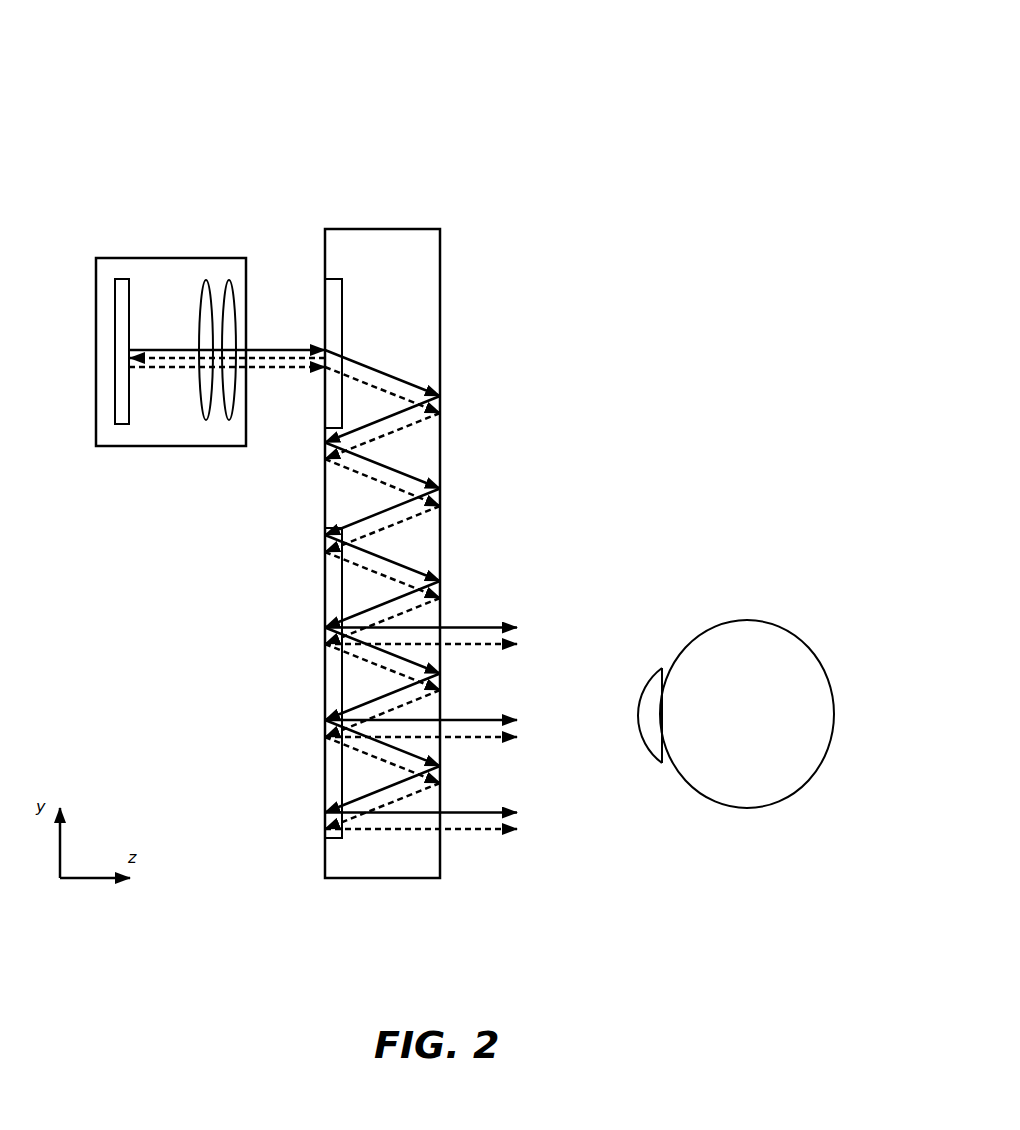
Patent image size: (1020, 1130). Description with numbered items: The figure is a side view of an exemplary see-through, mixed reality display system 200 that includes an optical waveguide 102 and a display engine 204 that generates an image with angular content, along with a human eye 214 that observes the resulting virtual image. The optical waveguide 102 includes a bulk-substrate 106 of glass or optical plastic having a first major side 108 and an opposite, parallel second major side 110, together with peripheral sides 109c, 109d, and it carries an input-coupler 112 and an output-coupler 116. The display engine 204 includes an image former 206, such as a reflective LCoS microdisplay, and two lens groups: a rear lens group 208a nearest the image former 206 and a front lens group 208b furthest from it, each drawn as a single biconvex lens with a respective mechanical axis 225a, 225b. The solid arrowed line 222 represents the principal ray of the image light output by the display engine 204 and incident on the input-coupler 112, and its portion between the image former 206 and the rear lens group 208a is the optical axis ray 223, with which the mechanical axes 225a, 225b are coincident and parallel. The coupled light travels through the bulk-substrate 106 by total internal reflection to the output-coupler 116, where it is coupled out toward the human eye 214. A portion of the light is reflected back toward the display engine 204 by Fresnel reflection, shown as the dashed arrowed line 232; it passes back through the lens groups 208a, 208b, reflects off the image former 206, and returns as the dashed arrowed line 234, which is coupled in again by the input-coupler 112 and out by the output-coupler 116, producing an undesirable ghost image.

The see-through mixed reality display system 200 is at (328, 29).
The optical waveguide 102 is at (355, 196).
The bulk-substrate 106 is at (398, 266).
The first major side 108 is at (442, 262).
The second major side 110 is at (322, 242).
The peripheral side 109c is at (390, 229).
The peripheral side 109d is at (405, 879).
The input-coupler 112 is at (324, 288).
The output-coupler 116 is at (324, 787).
The display engine 204 is at (207, 258).
The image former 206 is at (124, 425).
The optical axis ray 223 is at (152, 348).
The mechanical axis 225a is at (206, 346).
The mechanical axis 225b is at (232, 278).
The lens group 208a is at (206, 421).
The lens group 208b is at (230, 421).
The solid arrowed line 222 is at (272, 348).
The dashed arrowed line 232 is at (300, 356).
The dashed arrowed line 234 is at (290, 370).
The human eye 214 is at (770, 655).